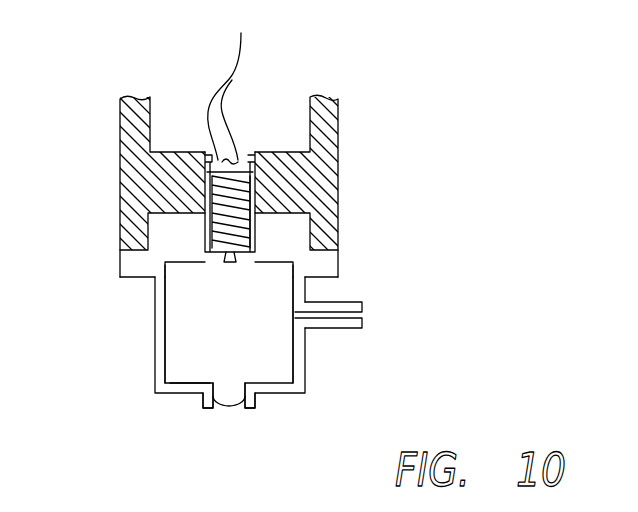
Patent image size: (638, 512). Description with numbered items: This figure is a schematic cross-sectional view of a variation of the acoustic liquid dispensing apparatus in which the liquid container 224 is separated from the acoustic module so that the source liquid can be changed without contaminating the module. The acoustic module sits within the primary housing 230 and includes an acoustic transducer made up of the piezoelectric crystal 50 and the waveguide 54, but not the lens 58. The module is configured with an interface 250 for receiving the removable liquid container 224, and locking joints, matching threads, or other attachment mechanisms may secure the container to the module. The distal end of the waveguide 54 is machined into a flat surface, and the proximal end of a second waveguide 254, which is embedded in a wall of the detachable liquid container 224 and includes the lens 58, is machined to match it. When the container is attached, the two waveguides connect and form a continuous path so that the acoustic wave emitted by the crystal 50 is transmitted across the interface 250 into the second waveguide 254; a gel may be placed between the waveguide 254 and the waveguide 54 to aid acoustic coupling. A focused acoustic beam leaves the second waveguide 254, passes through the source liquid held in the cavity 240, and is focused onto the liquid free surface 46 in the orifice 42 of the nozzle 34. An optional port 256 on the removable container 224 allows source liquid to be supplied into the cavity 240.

The primary housing 230 is at (339, 153).
The interface 250 is at (294, 219).
The cavity 240 is at (185, 331).
The liquid container 224 is at (156, 377).
The port 256 is at (348, 331).
The lens 58 is at (236, 246).
The second waveguide 254 is at (240, 248).
The waveguide 54 is at (217, 152).
The piezoelectric crystal 50 is at (242, 153).
The orifice 42 is at (218, 412).
The nozzle 34 is at (257, 400).
The liquid free surface 46 is at (230, 404).